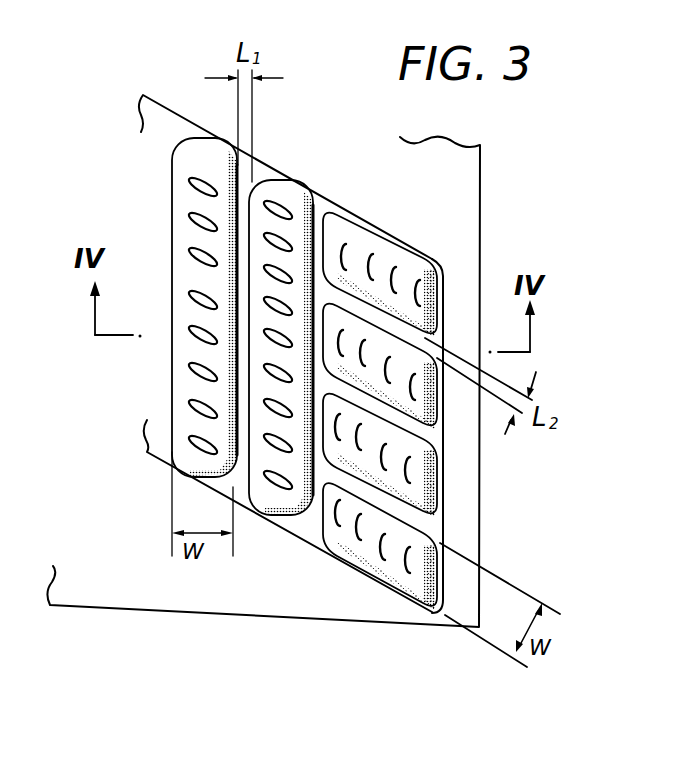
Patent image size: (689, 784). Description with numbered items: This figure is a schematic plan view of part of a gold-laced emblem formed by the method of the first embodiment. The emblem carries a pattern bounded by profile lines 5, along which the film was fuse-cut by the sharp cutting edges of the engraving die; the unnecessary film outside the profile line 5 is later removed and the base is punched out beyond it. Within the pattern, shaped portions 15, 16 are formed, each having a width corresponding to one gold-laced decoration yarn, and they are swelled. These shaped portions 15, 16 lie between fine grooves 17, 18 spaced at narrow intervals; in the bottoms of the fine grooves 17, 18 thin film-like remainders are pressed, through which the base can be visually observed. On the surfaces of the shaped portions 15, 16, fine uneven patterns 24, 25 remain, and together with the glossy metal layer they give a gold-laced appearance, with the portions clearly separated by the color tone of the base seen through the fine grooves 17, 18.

The profile line 5 is at (290, 172).
The shaped portion 15 is at (440, 418).
The shaped portion 16 is at (270, 498).
The fine groove 17 is at (245, 213).
The fine groove 18 is at (413, 264).
The uneven pattern 24 is at (357, 428).
The uneven pattern 25 is at (197, 253).